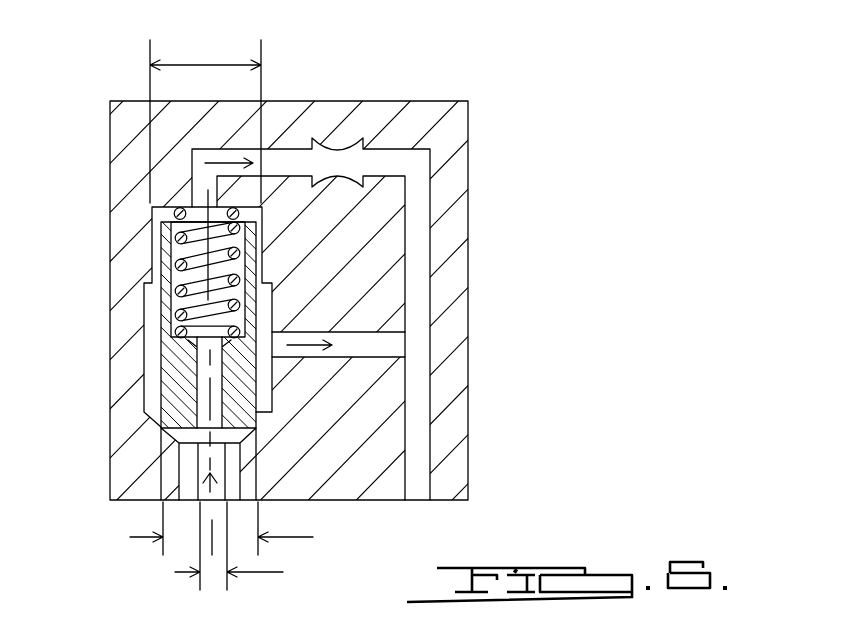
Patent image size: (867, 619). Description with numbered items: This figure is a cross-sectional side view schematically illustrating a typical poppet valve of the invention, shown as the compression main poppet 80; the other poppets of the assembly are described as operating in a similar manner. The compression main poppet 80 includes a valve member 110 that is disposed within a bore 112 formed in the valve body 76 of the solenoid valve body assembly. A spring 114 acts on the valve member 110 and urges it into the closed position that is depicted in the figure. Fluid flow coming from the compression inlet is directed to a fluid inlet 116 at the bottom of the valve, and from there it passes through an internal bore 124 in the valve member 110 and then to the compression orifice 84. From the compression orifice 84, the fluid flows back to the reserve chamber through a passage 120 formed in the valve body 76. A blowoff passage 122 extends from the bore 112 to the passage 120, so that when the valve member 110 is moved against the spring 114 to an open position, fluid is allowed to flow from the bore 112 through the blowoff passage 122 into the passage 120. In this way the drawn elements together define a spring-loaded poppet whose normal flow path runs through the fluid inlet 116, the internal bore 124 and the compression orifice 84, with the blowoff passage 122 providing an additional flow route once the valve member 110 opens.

The compression main poppet 80 is at (505, 112).
The valve body 76 is at (455, 283).
The compression orifice 84 is at (325, 202).
The passage 120 is at (417, 210).
The blowoff passage 122 is at (388, 346).
The valve member 110 is at (170, 352).
The bore 112 is at (148, 303).
The spring 114 is at (178, 258).
The internal bore 124 is at (200, 392).
The fluid inlet 116 is at (185, 463).